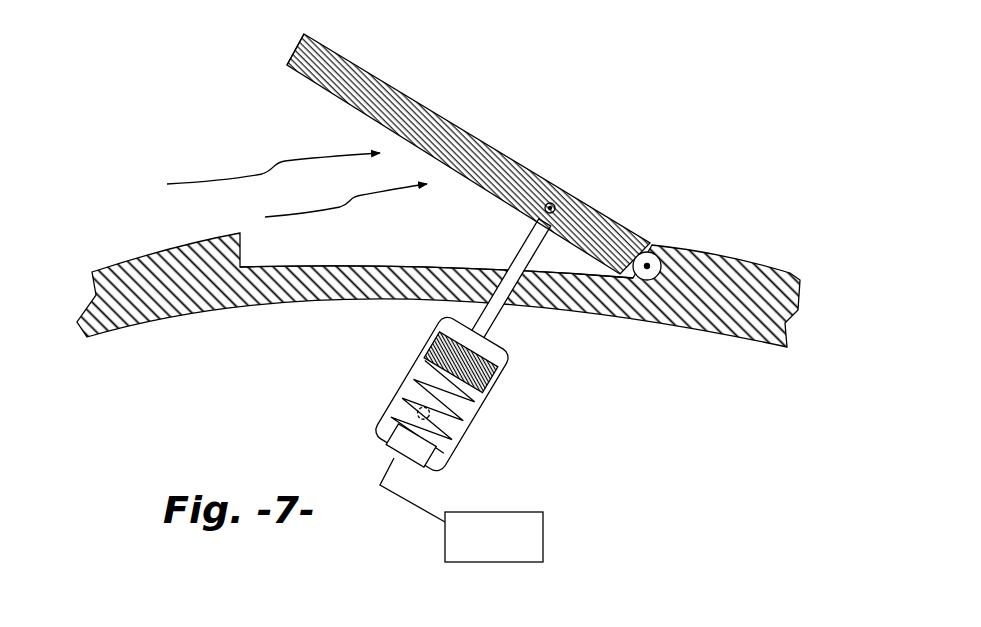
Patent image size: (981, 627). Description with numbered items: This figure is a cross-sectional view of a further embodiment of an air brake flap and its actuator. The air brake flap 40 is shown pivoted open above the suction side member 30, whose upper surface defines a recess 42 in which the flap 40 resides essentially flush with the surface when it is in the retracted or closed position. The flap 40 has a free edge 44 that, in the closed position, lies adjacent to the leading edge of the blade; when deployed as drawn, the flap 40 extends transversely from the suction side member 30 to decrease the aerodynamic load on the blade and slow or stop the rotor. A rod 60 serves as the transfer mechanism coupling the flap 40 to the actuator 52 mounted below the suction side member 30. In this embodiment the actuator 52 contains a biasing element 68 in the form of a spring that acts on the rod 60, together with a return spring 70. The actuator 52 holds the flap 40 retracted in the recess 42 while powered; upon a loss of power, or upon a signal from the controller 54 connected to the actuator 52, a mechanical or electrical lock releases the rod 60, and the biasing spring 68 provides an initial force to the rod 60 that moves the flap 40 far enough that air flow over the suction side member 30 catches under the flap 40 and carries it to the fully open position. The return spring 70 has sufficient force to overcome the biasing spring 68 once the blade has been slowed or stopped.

The suction side member 30 is at (127, 262).
The air brake flap 40 is at (482, 140).
The recess 42 is at (395, 267).
The free edge 44 is at (292, 52).
The actuator 52 is at (509, 411).
The controller 54 is at (483, 562).
The rod 60 is at (518, 242).
The biasing element (biasing spring) 68 is at (477, 407).
The return spring 70 is at (500, 362).